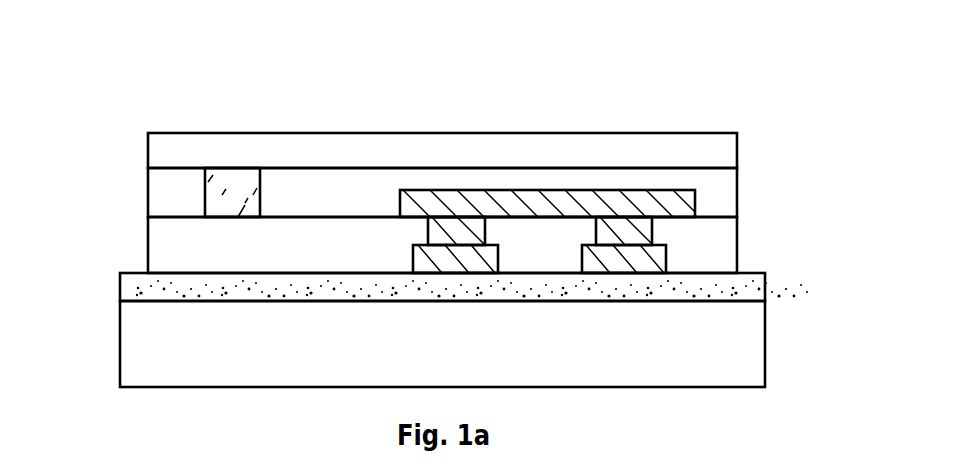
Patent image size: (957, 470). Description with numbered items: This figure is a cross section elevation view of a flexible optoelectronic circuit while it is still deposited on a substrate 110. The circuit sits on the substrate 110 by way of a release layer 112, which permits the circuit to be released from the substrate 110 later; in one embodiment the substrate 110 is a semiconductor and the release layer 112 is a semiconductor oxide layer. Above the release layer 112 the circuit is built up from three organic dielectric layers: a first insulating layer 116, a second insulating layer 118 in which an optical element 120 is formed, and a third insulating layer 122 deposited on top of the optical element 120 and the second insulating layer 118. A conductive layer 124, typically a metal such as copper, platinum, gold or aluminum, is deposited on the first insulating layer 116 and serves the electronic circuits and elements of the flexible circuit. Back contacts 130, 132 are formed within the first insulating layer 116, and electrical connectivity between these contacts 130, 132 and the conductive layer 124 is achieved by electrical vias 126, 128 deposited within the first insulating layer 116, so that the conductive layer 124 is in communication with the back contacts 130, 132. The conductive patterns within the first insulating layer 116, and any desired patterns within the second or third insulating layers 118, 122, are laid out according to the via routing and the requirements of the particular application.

The substrate 110 is at (743, 352).
The release layer 112 is at (747, 290).
The first insulating layer 116 is at (170, 243).
The second insulating layer 118 is at (173, 192).
The optical element 120 is at (207, 215).
The third insulating layer 122 is at (173, 145).
The conductive layer 124 is at (675, 201).
The electrical via 126 is at (643, 228).
The electrical via 128 is at (473, 233).
The back contact 130 is at (436, 266).
The back contact 132 is at (648, 262).